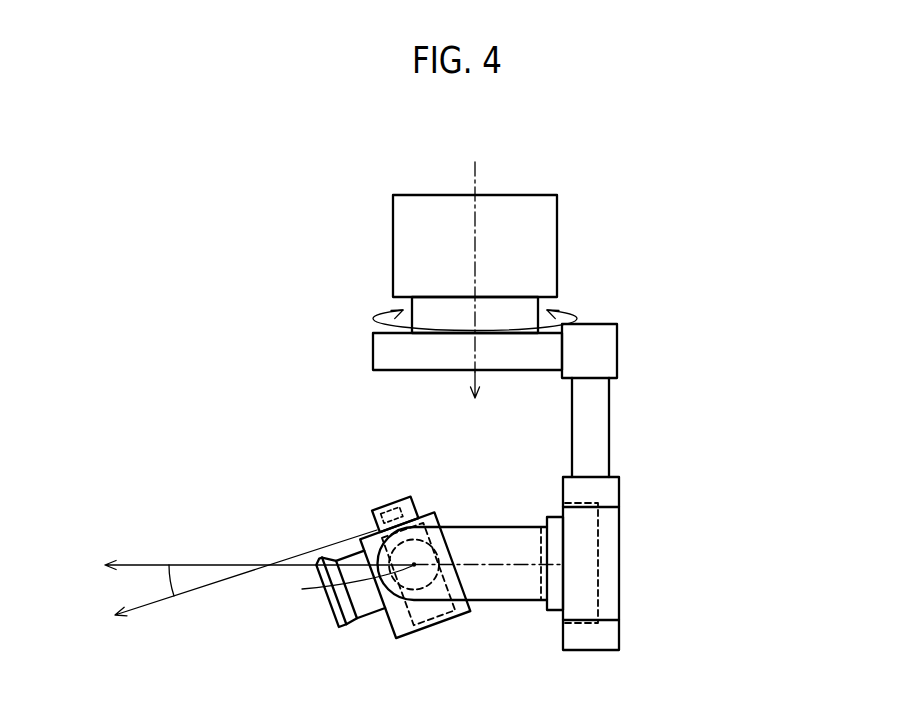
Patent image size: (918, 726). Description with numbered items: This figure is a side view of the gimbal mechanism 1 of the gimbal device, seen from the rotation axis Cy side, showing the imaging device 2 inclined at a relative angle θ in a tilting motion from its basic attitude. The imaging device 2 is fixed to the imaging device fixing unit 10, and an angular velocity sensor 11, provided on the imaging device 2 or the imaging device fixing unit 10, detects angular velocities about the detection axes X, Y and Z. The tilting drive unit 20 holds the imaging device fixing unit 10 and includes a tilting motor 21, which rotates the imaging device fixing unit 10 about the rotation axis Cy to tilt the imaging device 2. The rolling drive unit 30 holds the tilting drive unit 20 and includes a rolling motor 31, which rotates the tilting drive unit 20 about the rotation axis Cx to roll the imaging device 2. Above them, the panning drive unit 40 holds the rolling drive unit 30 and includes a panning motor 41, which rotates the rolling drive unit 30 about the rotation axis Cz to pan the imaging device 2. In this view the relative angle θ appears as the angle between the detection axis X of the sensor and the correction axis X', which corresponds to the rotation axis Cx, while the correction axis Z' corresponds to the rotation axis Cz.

The gimbal mechanism 1 is at (667, 304).
The imaging device 2 is at (406, 500).
The imaging device fixing unit 10 is at (394, 640).
The angular velocity sensor 11 is at (390, 504).
The tilting drive unit 20 is at (471, 532).
The tilting motor 21 is at (422, 584).
The rolling drive unit 30 is at (613, 540).
The rolling motor 31 is at (590, 586).
The panning drive unit 40 is at (557, 238).
The panning motor 41 is at (435, 307).